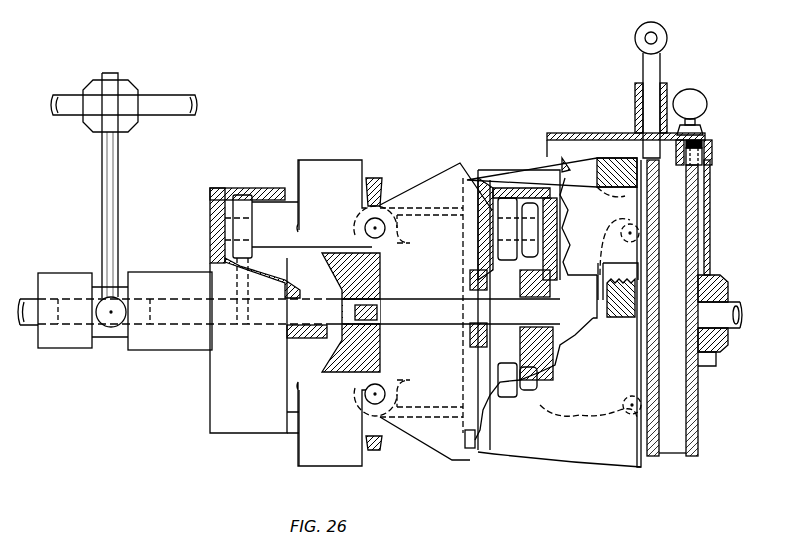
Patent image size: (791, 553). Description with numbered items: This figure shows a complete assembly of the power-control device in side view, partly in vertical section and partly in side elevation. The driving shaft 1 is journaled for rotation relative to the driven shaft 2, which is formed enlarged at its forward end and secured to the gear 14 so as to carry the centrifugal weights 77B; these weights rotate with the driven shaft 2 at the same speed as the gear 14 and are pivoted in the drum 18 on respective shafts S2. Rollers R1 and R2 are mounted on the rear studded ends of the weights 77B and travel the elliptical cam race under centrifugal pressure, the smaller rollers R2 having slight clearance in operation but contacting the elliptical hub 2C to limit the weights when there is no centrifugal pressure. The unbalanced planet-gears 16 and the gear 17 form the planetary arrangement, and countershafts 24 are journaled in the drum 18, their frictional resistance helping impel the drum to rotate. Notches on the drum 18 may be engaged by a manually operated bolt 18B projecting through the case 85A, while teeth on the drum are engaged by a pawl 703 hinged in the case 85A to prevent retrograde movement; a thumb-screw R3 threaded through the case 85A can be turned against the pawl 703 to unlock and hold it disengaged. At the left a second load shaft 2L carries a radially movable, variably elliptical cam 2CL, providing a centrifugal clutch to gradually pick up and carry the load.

The driving shaft 1 is at (416, 322).
The driven shaft 2 is at (313, 300).
The elliptical hub 2C is at (530, 342).
The variably elliptical cam 2CL is at (212, 212).
The second load shaft 2L is at (22, 300).
The gear 14 is at (533, 170).
The planet-gears 16 is at (622, 180).
The gear 17 is at (616, 302).
The drum 18 is at (520, 190).
The manually operated bolt 18B is at (643, 60).
The countershafts 24 is at (626, 230).
The centrifugal weights 77B is at (460, 163).
The case 85A is at (613, 132).
The pawl 703 is at (706, 144).
The roller R1 is at (507, 262).
The smaller roller R2 is at (538, 254).
The thumb-screw R3 is at (697, 96).
The shafts S2 is at (386, 228).